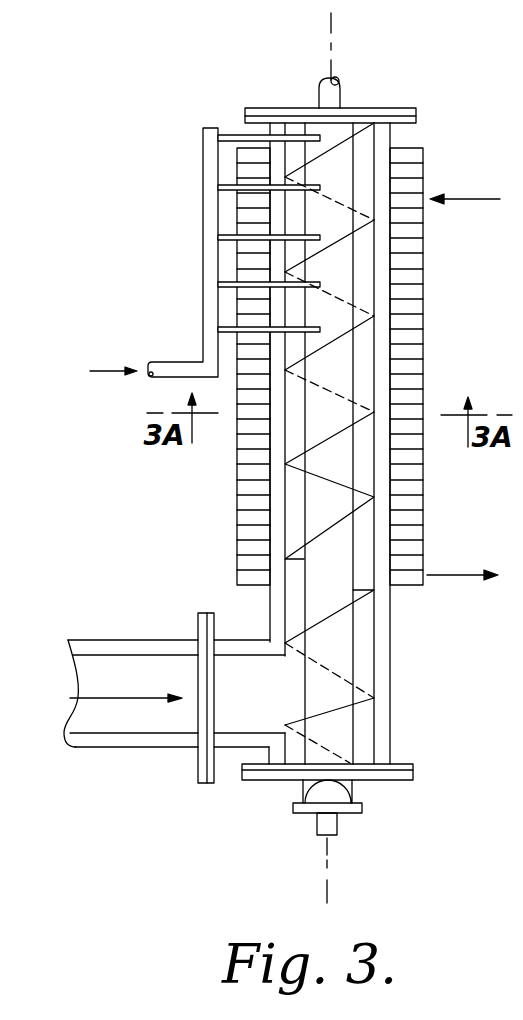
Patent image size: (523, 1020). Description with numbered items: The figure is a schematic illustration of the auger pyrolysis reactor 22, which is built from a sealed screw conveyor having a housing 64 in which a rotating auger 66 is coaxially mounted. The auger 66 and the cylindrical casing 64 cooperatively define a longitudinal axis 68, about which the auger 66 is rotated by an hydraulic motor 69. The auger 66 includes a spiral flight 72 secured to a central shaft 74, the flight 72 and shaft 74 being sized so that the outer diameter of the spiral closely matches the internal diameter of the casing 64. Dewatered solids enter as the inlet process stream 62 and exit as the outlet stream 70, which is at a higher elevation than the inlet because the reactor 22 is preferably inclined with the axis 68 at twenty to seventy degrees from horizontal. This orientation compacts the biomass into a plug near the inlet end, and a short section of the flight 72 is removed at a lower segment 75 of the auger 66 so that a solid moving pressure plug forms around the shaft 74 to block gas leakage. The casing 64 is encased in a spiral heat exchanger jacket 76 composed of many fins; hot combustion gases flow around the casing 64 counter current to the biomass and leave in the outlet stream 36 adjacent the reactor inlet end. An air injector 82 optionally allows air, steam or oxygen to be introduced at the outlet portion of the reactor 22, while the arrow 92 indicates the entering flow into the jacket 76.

The pyrolysis reactor 22 is at (227, 510).
The outlet stream 36 is at (450, 575).
The process stream 62 is at (78, 700).
The housing 64 is at (380, 618).
The rotating auger 66 is at (333, 742).
The longitudinal axis 68 is at (330, 45).
The hydraulic motor 69 is at (337, 830).
The outlet stream 70 is at (330, 93).
The spiral flight 72 is at (327, 250).
The central shaft 74 is at (335, 373).
The lower segment 75 is at (340, 658).
The spiral heat exchanger jacket 76 is at (417, 298).
The air injector 82 is at (207, 262).
The heating fluid inlet 92 is at (470, 199).